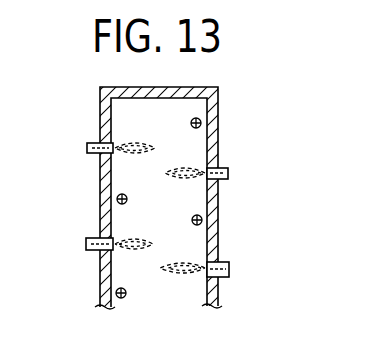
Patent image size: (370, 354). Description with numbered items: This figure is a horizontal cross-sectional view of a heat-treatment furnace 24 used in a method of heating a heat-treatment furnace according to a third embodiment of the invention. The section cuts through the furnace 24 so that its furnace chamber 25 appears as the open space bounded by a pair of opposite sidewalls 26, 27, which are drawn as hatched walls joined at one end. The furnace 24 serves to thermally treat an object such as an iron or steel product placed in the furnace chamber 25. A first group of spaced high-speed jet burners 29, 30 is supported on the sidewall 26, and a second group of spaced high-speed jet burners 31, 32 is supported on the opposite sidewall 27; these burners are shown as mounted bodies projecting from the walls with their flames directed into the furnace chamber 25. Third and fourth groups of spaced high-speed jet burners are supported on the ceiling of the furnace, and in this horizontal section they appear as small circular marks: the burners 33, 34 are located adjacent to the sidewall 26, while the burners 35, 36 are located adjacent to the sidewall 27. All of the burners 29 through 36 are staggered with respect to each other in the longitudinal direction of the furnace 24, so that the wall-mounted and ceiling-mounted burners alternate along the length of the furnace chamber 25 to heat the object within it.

The heat-treatment furnace 24 is at (185, 190).
The furnace chamber 25 is at (113, 100).
The sidewall 26 is at (218, 200).
The sidewall 27 is at (100, 213).
The high-speed jet burner 29 is at (229, 276).
The high-speed jet burner 30 is at (228, 170).
The high-speed jet burner 31 is at (90, 250).
The high-speed jet burner 32 is at (88, 146).
The high-speed jet burner 33 is at (218, 230).
The high-speed jet burner 34 is at (218, 132).
The high-speed jet burner 35 is at (116, 294).
The high-speed jet burner 36 is at (117, 198).